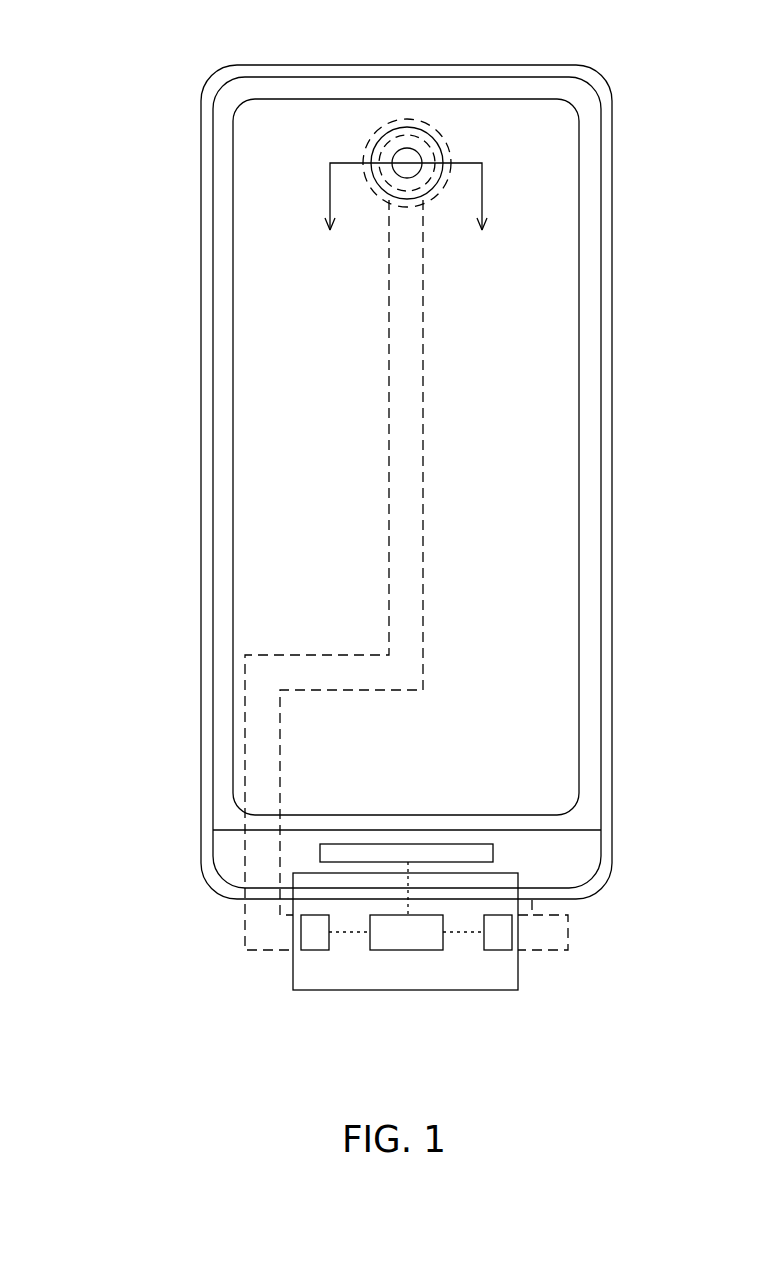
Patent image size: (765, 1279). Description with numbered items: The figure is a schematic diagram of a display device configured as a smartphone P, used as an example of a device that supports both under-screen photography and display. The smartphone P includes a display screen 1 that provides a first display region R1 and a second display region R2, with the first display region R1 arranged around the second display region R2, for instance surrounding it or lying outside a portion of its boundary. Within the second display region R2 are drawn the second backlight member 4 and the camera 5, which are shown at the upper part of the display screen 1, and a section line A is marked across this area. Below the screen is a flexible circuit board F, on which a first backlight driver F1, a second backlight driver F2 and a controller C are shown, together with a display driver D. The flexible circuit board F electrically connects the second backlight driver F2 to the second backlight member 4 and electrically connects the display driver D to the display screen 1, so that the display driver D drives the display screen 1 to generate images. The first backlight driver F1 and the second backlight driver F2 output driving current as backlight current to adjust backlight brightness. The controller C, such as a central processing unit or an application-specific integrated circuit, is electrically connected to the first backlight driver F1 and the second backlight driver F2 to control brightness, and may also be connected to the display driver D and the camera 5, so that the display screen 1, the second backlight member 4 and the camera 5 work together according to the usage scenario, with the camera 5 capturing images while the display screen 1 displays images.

The smartphone P is at (365, 482).
The display screen 1 is at (580, 245).
The first display region R1 is at (547, 164).
The second display region R2 is at (448, 150).
The second backlight member 4 is at (438, 128).
The camera 5 is at (406, 148).
The section line A- A is at (406, 217).
The display driver D is at (482, 850).
The controller C is at (426, 915).
The flexible circuit board F is at (463, 980).
The first backlight driver F1 is at (498, 938).
The second backlight driver F2 is at (319, 940).